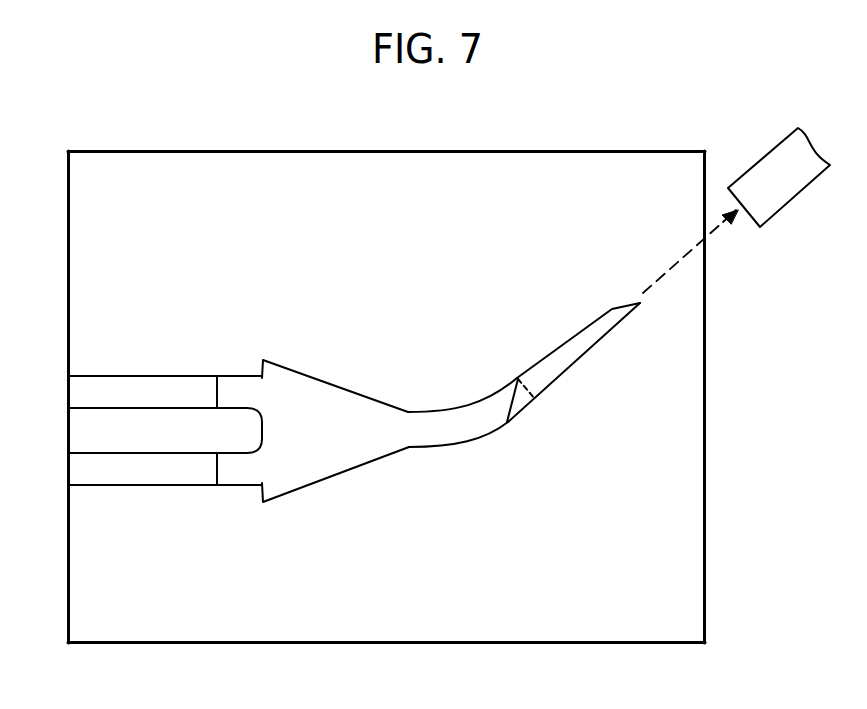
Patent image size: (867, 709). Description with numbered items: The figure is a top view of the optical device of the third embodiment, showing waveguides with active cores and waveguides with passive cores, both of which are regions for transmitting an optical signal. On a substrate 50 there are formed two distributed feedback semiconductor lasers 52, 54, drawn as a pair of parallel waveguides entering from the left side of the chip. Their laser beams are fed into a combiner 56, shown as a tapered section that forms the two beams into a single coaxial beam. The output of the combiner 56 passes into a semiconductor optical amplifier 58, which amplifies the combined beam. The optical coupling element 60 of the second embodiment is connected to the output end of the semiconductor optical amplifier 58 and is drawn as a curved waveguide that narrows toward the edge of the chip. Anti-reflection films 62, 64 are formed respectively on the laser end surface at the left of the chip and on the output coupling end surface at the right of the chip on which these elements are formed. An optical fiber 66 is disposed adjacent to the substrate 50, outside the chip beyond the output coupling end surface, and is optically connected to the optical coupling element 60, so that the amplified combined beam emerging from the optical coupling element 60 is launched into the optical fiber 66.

The substrate 50 is at (627, 645).
The distributed feedback semiconductor laser 52 is at (143, 375).
The distributed feedback semiconductor laser 54 is at (143, 487).
The combiner 56 is at (328, 383).
The semiconductor optical amplifier 58 is at (523, 415).
The optical coupling element 60 is at (577, 333).
The anti-reflection film 62 is at (66, 632).
The anti-reflection film 64 is at (706, 628).
The optical fiber 66 is at (752, 220).